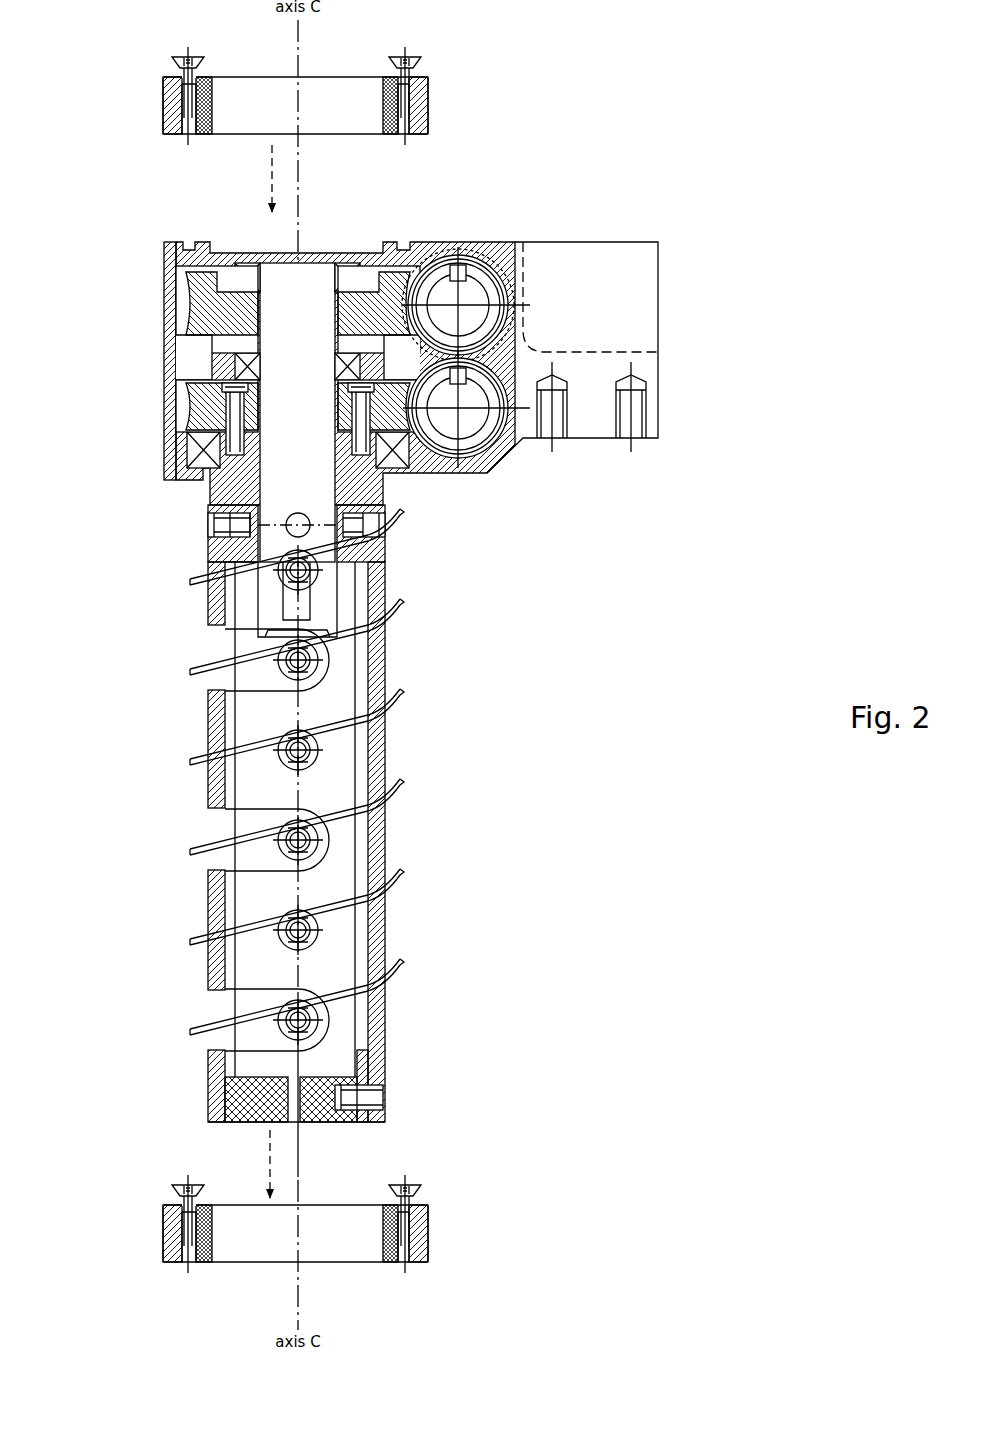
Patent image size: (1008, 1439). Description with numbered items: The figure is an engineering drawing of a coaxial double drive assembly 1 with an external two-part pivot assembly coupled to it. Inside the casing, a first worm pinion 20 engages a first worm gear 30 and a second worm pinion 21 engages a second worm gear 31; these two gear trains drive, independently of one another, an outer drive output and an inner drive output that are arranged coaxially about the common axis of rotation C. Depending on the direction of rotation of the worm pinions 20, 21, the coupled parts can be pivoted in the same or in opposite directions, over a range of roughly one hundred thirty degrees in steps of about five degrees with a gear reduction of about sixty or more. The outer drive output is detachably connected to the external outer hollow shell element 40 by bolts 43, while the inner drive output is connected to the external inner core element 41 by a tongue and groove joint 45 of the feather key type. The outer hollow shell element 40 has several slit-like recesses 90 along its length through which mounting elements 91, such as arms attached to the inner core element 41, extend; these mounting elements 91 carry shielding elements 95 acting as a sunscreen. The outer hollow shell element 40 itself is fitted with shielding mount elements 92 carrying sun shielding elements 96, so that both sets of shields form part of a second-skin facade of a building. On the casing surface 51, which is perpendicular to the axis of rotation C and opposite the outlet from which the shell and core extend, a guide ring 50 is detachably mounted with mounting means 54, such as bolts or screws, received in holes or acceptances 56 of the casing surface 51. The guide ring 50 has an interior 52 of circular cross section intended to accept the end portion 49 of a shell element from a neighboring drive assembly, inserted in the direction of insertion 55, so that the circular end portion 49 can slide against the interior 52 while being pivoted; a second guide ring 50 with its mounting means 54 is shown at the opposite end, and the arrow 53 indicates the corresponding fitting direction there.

The coaxial double drive assembly 1 is at (116, 333).
The first worm pinion 20 is at (469, 421).
The second worm pinion 21 is at (468, 294).
The first worm gear 30 is at (206, 410).
The second worm gear 31 is at (206, 305).
The outer hollow shell element 40 is at (381, 572).
The inner core element 41 is at (248, 675).
The bolts 43 is at (203, 526).
The tongue and groove joint 45 is at (290, 608).
The end portion 49 is at (203, 1120).
The guide ring 50 is at (450, 100).
The casing surface 51 is at (213, 244).
The interior 52 is at (297, 669).
The mounting direction 53 is at (254, 178).
The detachable mounting means 54 is at (186, 52).
The direction of insertion 55 is at (253, 1164).
The holes or acceptances 56 is at (189, 239).
The slit-like recesses 90 is at (218, 824).
The mounting elements 91 is at (311, 850).
The shielding mount elements 92 is at (308, 756).
The shielding elements 95 is at (341, 820).
The sun shielding elements 96 is at (341, 730).